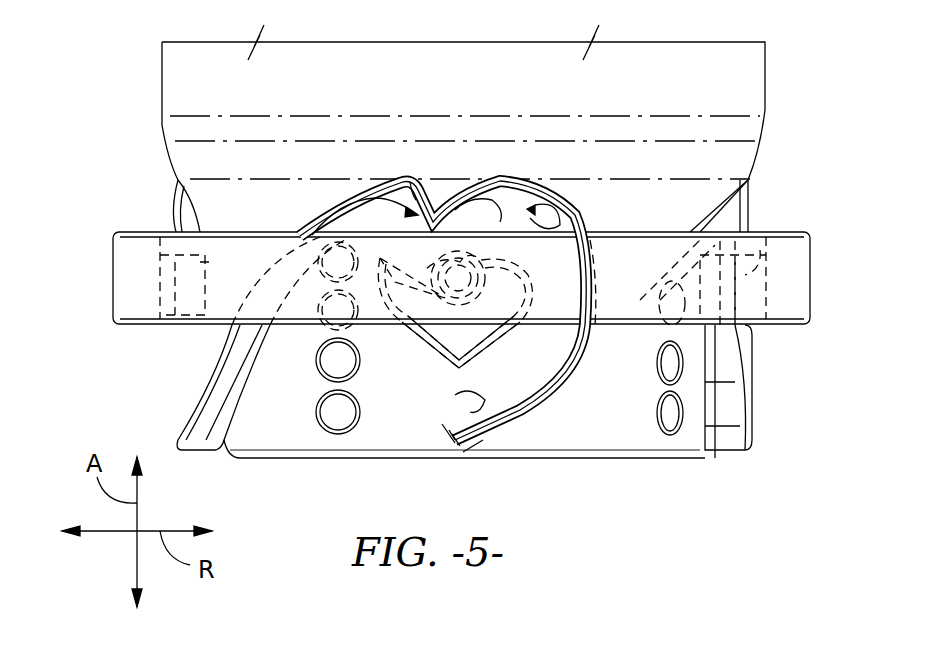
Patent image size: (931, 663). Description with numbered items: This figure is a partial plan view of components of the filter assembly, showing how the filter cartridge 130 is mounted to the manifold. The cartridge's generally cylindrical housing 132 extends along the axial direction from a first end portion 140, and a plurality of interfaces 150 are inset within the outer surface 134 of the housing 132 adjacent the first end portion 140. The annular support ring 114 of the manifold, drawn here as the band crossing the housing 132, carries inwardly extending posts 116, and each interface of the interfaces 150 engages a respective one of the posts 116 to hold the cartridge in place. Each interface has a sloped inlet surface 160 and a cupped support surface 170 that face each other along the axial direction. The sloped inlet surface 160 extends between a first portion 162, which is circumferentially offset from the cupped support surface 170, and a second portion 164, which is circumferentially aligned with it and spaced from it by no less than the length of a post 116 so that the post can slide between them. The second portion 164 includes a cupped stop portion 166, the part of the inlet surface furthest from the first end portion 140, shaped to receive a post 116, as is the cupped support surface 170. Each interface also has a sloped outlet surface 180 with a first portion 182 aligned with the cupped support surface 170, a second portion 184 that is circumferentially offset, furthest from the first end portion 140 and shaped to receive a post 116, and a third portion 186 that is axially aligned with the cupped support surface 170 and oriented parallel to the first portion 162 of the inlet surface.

The support ring 114 is at (812, 278).
The posts 116 is at (448, 292).
The filter cartridge 130 is at (765, 80).
The housing 132 is at (432, 72).
The outer surface 134 is at (735, 195).
The first end portion 140 is at (770, 445).
The interfaces 150 is at (343, 435).
The sloped inlet surface 160 is at (215, 405).
The first portion 162 is at (222, 348).
The second portion 164 is at (355, 222).
The cupped stop portion 166 is at (412, 185).
The cupped support surface 170 is at (418, 300).
The sloped outlet surface 180 is at (560, 380).
The first portion 182 is at (500, 185).
The second portion 184 is at (565, 215).
The third portion 186 is at (520, 420).